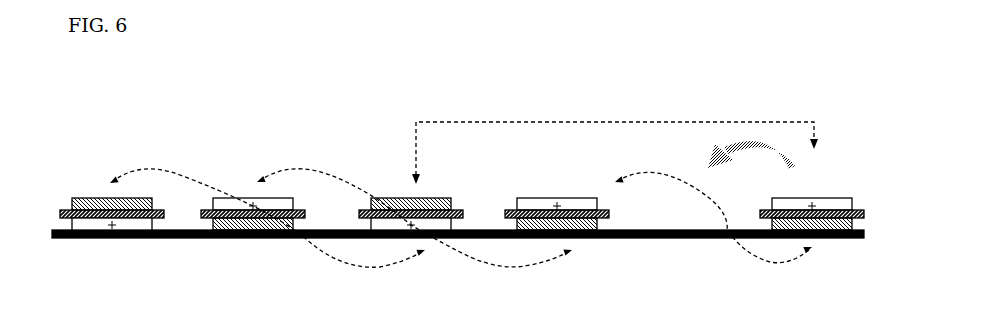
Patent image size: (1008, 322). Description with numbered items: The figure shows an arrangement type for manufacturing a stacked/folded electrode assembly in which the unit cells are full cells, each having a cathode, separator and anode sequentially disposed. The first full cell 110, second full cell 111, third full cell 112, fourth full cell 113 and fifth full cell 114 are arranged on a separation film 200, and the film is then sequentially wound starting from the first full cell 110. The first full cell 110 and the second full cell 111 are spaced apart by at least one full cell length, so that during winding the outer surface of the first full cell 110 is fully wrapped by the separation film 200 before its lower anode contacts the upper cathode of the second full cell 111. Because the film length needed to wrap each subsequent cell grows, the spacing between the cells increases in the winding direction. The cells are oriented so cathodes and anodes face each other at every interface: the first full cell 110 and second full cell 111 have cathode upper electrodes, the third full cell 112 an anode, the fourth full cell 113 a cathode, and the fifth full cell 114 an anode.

The first full cell 110 is at (812, 198).
The second full cell 111 is at (543, 198).
The third full cell 112 is at (402, 198).
The fourth full cell 113 is at (233, 198).
The fifth full cell 114 is at (97, 198).
The separation film 200 is at (185, 238).